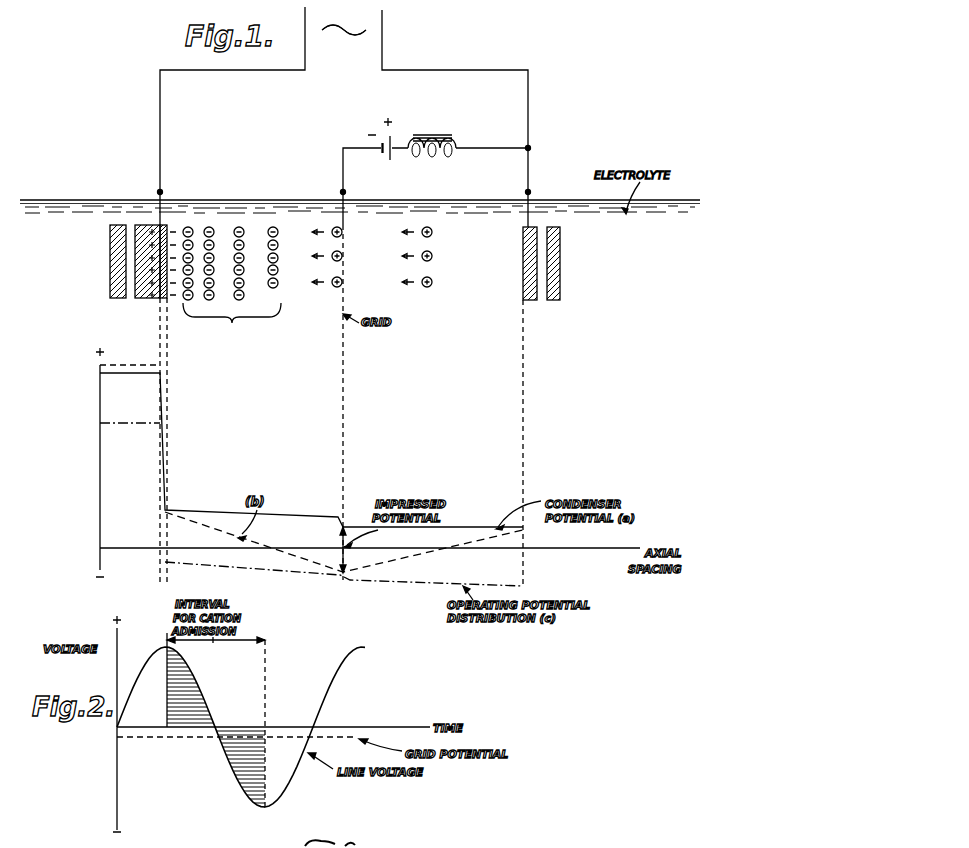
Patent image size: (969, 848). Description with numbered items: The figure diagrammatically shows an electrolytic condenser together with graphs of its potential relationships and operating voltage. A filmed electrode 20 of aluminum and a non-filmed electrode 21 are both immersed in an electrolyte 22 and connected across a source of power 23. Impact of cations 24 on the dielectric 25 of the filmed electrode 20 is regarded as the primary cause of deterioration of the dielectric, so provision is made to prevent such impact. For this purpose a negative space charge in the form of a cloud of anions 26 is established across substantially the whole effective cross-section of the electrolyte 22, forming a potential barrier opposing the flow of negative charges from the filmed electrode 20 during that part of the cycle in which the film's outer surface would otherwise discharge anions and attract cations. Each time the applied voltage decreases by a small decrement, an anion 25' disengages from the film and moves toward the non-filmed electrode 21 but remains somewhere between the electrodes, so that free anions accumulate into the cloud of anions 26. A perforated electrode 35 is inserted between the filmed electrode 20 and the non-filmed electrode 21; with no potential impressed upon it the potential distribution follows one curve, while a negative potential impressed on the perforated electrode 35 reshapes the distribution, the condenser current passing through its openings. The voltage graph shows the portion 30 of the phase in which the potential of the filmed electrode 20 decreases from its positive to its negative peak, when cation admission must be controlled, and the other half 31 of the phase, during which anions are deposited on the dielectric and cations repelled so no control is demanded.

In FIG. 1, the filmed electrode 20 is at (118, 300).
In FIG. 1, the non-filmed electrode 21 is at (528, 302).
In FIG. 1, the electrolyte 22 is at (563, 206).
In FIG. 1, the source of power 23 is at (370, 43).
In FIG. 1, the cations 24 is at (427, 288).
In FIG. 1, the dielectric 25 is at (168, 226).
In FIG. 1, the anion 25' is at (195, 224).
In FIG. 1, the cloud of anions 26 is at (231, 234).
In FIG. 1, the perforated electrode 35 is at (350, 224).
In FIG. 2, the portion of the phase 30 is at (205, 720).
In FIG. 2, the other half of the phase 31 is at (296, 786).